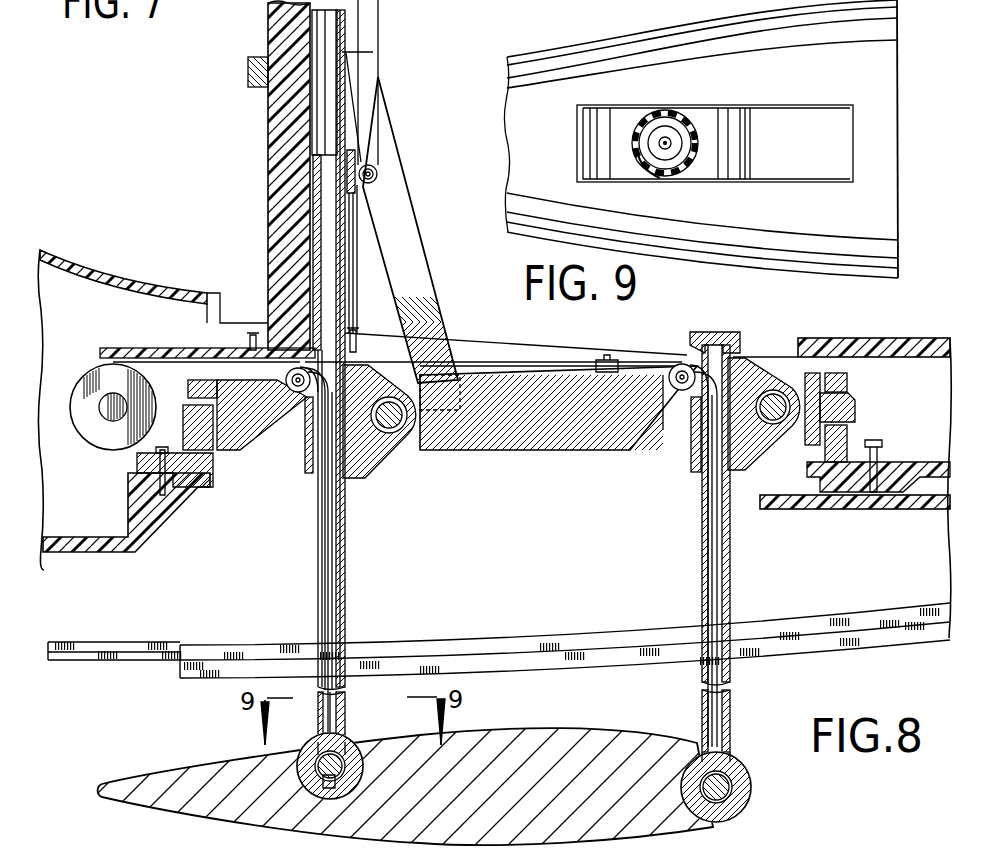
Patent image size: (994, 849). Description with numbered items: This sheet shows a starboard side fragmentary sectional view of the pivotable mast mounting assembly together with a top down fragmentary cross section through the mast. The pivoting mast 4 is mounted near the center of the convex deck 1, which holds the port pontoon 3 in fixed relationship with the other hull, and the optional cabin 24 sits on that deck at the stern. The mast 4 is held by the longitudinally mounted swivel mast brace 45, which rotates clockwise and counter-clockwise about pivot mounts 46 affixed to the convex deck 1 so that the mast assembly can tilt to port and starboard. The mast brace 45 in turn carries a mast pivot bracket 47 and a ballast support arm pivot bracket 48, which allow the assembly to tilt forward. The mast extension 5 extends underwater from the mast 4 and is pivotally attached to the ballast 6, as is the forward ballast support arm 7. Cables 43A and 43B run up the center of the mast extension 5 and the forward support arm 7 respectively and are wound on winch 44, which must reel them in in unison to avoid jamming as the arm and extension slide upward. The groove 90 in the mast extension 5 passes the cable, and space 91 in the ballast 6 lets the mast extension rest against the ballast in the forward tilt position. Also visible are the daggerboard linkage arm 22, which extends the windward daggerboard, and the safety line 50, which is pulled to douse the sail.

In FIG. 8, the convex deck 1 is at (158, 525).
In FIG. 8, the port pontoon 3 is at (864, 571).
In FIG. 8, the mast 4 is at (273, 196).
In FIG. 9, the mast extension 5 is at (677, 114).
In FIG. 8, the mast extension 5 is at (345, 580).
In FIG. 9, the ballast 6 is at (520, 128).
In FIG. 8, the ballast 6 is at (553, 728).
In FIG. 8, the forward ballast support arm 7 is at (731, 582).
In FIG. 8, the daggerboard linkage arm 22 is at (405, 220).
In FIG. 8, the cabin 24 is at (153, 284).
In FIG. 9, the cable 43A is at (668, 141).
In FIG. 8, the cable 43A is at (324, 518).
In FIG. 8, the cable 43B is at (544, 361).
In FIG. 8, the winch 44 is at (92, 436).
In FIG. 8, the swivel mast brace 45 is at (540, 450).
In FIG. 8, the pivot mounts 46 is at (193, 452).
In FIG. 8, the mast pivot bracket 47 is at (378, 450).
In FIG. 8, the ballast support arm pivot bracket 48 is at (697, 452).
In FIG. 8, the safety line 50 is at (380, 15).
In FIG. 9, the groove 90 is at (636, 148).
In FIG. 8, the groove 90 is at (318, 563).
In FIG. 9, the space 91 is at (810, 118).
In FIG. 8, the space 91 is at (373, 754).